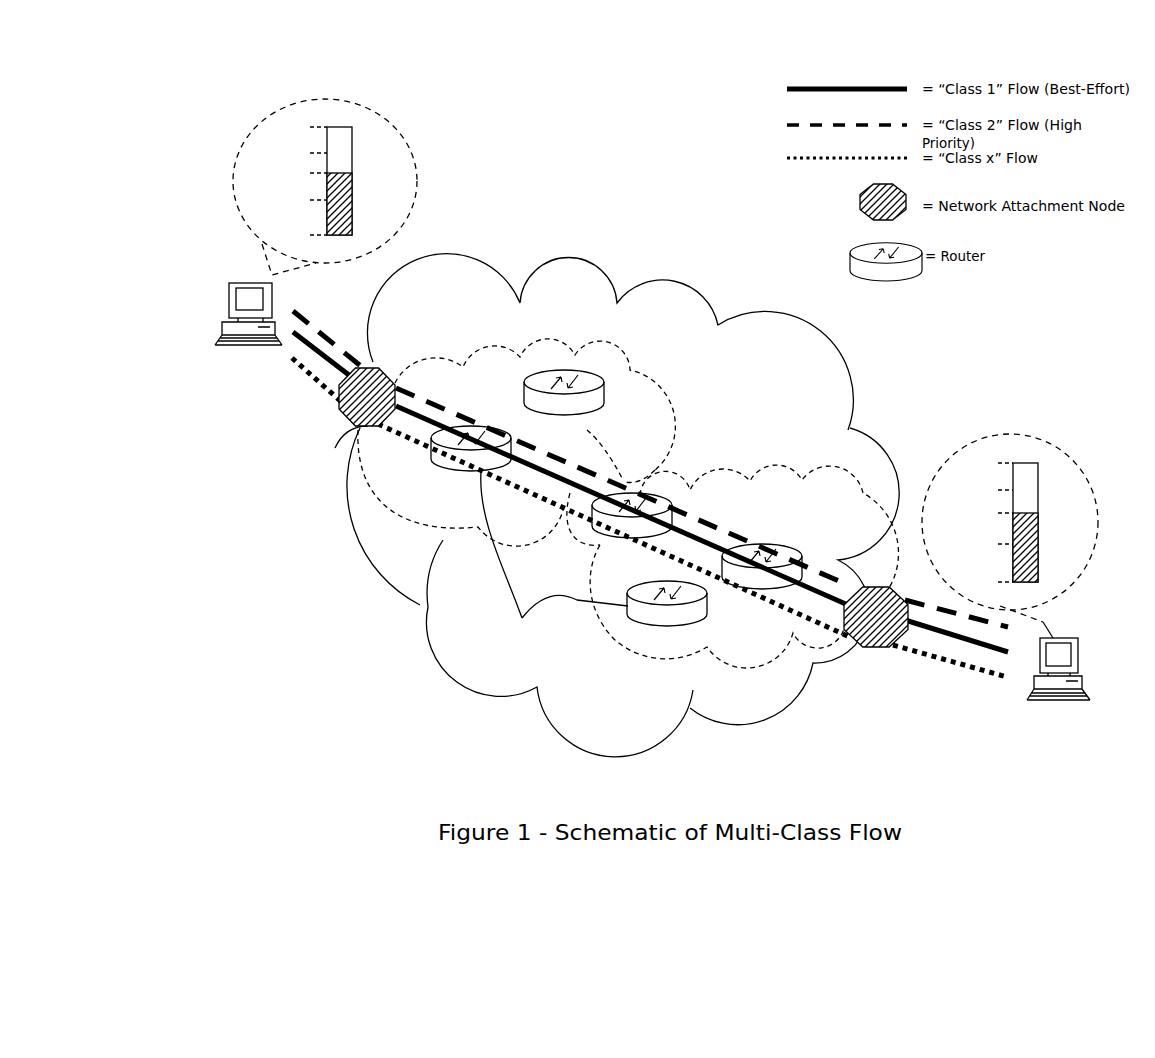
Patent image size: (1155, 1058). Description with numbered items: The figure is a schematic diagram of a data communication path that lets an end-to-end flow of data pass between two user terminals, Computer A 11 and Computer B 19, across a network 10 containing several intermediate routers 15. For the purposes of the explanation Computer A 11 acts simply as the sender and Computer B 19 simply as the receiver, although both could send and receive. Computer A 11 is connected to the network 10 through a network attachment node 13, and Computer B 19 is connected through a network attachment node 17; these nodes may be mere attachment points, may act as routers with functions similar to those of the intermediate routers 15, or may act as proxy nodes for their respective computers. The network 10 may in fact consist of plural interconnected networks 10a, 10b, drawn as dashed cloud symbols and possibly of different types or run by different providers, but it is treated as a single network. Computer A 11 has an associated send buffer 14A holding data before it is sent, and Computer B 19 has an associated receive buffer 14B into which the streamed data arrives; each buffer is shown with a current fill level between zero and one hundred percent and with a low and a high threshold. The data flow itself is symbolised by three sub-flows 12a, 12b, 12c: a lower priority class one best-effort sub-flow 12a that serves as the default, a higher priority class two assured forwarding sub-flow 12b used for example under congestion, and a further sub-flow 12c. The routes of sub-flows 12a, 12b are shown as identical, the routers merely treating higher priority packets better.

The network 10 is at (578, 261).
The interconnected network 10a is at (431, 352).
The interconnected network 10b is at (714, 466).
The Computer A 11 is at (236, 279).
The Class 1 sub-flow 12a is at (312, 355).
The Class 2 sub-flow 12b is at (333, 336).
The sub-flow 12c is at (312, 390).
The network attachment node 13 is at (348, 424).
The send buffer 14A is at (419, 169).
The receive buffer 14B is at (1000, 433).
The intermediate routers 15 is at (554, 556).
The network attachment node 17 is at (883, 648).
The Computer B 19 is at (1074, 633).